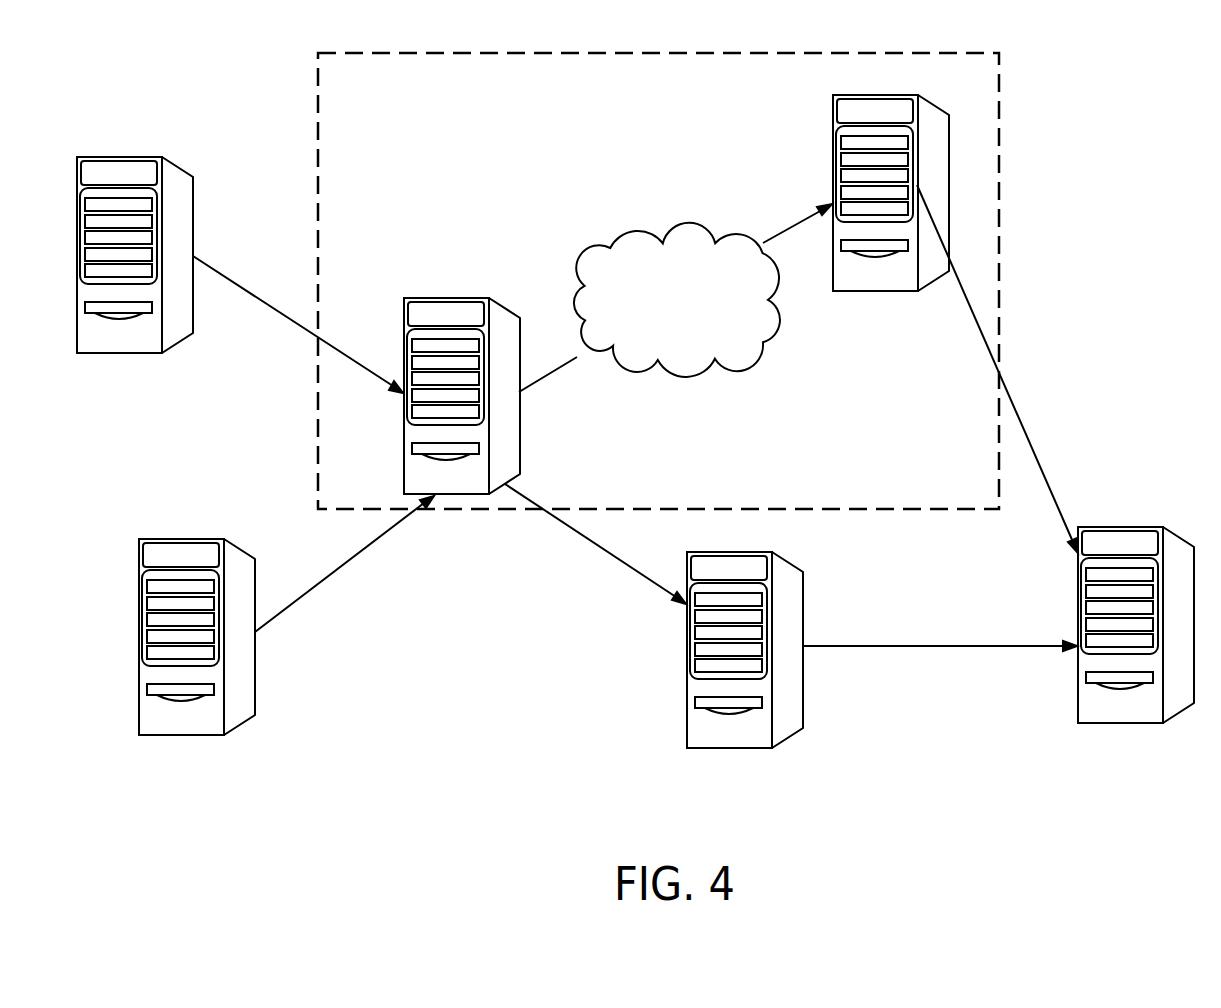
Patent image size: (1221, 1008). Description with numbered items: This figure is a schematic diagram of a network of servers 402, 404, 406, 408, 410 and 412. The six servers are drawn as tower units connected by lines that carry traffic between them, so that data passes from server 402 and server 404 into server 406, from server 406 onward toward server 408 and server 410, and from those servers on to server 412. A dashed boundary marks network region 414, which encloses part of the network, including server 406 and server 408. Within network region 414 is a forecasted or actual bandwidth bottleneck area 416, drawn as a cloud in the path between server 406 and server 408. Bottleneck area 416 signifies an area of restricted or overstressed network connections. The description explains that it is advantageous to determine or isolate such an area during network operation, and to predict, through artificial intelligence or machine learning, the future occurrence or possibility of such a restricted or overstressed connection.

The server 402 is at (118, 157).
The server 404 is at (185, 539).
The server 406 is at (450, 298).
The server 408 is at (880, 95).
The server 410 is at (733, 552).
The server 412 is at (1123, 527).
The network region 414 is at (623, 53).
The bandwidth bottleneck area 416 is at (688, 222).